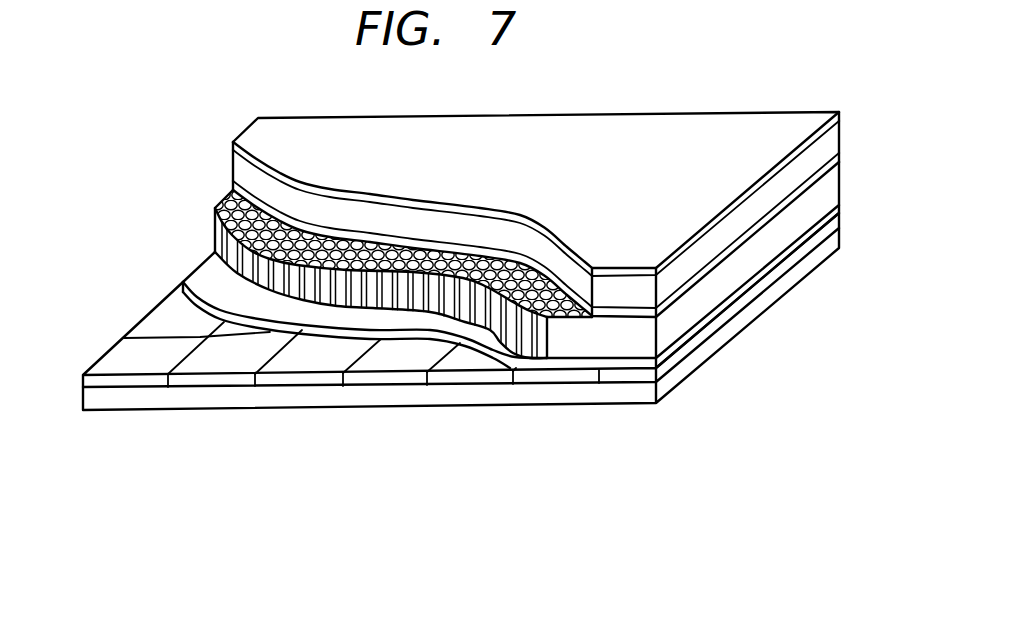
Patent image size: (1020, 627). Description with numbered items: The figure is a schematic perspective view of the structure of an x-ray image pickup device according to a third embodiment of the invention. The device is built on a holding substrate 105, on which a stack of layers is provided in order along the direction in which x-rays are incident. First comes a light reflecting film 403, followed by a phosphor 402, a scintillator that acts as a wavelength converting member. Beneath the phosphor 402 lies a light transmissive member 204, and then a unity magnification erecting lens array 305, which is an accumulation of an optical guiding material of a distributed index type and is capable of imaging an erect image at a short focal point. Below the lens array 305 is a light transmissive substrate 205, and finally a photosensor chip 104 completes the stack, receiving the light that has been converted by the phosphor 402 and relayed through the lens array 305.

The photosensor chip 104 is at (372, 378).
The holding substrate 105 is at (722, 339).
The light transmissive member 204 is at (842, 155).
The light transmissive substrate 205 is at (212, 312).
The unity magnification erecting lens array 305 is at (585, 343).
The phosphor (scintillator) 402 is at (242, 175).
The light reflecting film 403 is at (708, 123).